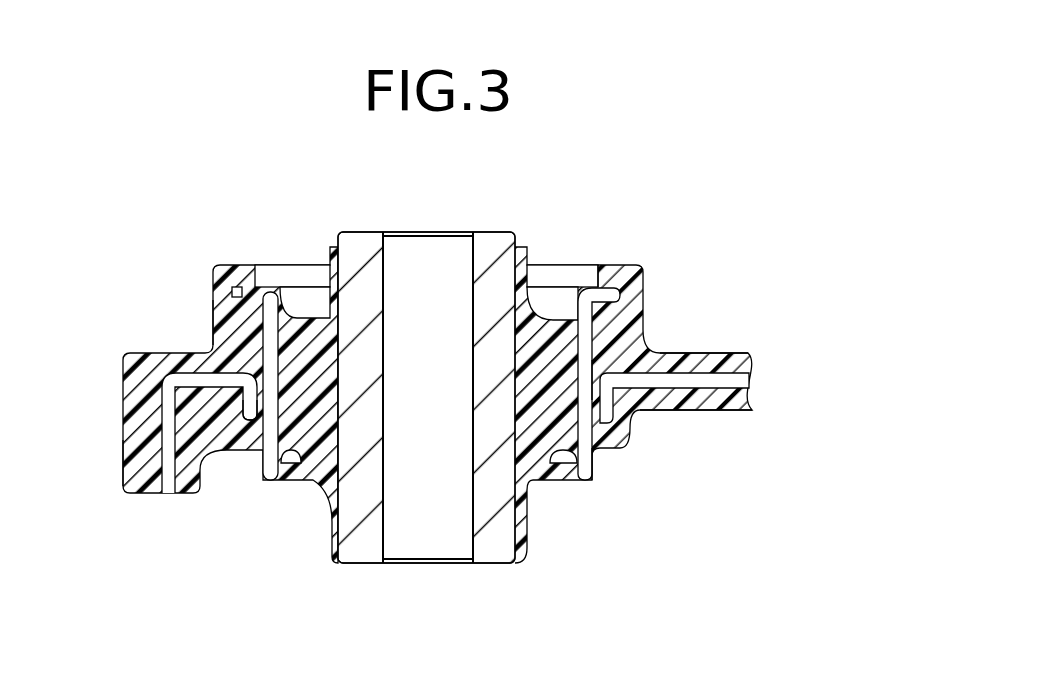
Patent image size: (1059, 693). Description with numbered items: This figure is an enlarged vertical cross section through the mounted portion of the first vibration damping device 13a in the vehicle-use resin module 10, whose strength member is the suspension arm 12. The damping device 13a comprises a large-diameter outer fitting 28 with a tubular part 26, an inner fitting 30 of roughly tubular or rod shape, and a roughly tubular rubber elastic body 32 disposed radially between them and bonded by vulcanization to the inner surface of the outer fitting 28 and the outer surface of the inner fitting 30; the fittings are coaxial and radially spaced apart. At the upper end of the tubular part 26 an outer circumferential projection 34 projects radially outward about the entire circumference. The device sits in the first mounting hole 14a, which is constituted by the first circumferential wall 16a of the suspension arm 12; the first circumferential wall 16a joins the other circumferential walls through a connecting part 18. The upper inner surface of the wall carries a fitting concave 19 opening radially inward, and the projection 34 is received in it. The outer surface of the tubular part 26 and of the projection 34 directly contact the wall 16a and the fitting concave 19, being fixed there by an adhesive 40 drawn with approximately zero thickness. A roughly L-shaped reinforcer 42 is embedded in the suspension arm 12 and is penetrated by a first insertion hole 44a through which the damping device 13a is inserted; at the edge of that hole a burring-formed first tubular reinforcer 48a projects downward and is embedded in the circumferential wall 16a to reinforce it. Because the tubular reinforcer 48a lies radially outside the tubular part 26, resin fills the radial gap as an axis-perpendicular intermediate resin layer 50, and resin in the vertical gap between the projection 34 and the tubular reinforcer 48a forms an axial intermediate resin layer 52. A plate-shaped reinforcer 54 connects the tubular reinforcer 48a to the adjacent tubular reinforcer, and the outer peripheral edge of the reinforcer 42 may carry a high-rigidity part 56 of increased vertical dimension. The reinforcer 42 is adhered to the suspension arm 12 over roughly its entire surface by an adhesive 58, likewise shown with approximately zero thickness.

The vehicle-use resin module 10 is at (681, 185).
The suspension arm 12 is at (213, 261).
The first vibration damping device 13a is at (542, 214).
The first mounting hole 14a is at (585, 265).
The first circumferential wall 16a is at (621, 326).
The connecting part 18 is at (716, 357).
The fitting concave 19 is at (237, 293).
The tubular part 26 is at (249, 422).
The outer fitting 28 is at (595, 481).
The inner fitting 30 is at (493, 546).
The rubber elastic body 32 is at (316, 330).
The outer circumferential projection 34 is at (643, 278).
The adhesive 40 is at (264, 362).
The reinforcer 42 is at (703, 412).
The first insertion hole 44a is at (600, 372).
The first tubular reinforcer 48a is at (261, 430).
The axis-perpendicular intermediate resin layer 50 is at (596, 420).
The axial intermediate resin layer 52 is at (242, 334).
The plate-shaped reinforcer 54 is at (683, 382).
The high-rigidity part 56 is at (168, 458).
The adhesive 58 is at (162, 418).